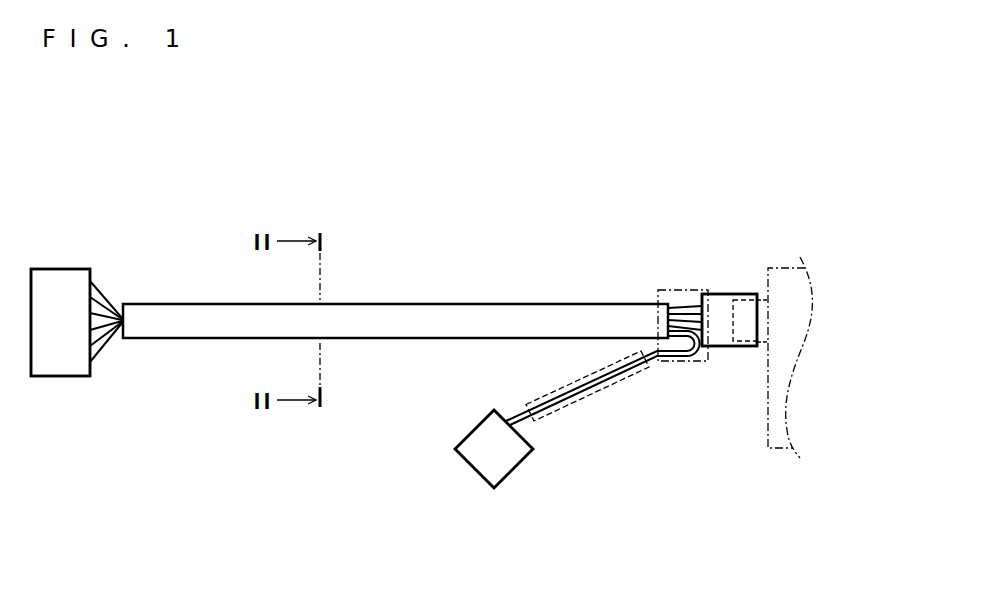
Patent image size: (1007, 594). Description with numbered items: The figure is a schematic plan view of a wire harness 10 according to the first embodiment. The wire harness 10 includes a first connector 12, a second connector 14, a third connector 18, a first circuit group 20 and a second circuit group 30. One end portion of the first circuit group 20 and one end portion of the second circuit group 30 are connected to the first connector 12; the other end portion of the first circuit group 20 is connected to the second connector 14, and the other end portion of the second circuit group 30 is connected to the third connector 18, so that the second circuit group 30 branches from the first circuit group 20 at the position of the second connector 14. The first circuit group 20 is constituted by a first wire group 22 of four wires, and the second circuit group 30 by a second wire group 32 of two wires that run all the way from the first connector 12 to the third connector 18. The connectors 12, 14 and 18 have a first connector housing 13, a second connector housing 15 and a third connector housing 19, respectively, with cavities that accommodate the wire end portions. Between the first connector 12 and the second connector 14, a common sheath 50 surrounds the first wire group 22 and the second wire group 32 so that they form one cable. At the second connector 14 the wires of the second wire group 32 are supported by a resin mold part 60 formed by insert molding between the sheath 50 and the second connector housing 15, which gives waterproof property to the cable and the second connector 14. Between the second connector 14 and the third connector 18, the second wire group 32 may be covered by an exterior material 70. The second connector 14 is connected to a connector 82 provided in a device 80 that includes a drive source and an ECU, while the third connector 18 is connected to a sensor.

The wire harness 10 is at (377, 260).
The first connector 12 is at (63, 382).
The first connector housing 13 is at (58, 287).
The second connector 14 is at (727, 292).
The second connector housing 15 is at (720, 346).
The third connector 18 is at (508, 478).
The third connector housing 19 is at (475, 440).
The first circuit group 20 is at (400, 285).
The first wire group 22 is at (115, 318).
The second circuit group 30 is at (395, 400).
The second wire group 32 is at (107, 343).
The sheath 50 is at (471, 304).
The mold part 60 is at (684, 362).
The exterior material 70 is at (573, 402).
The device 80 is at (770, 450).
The connector 82 is at (765, 347).